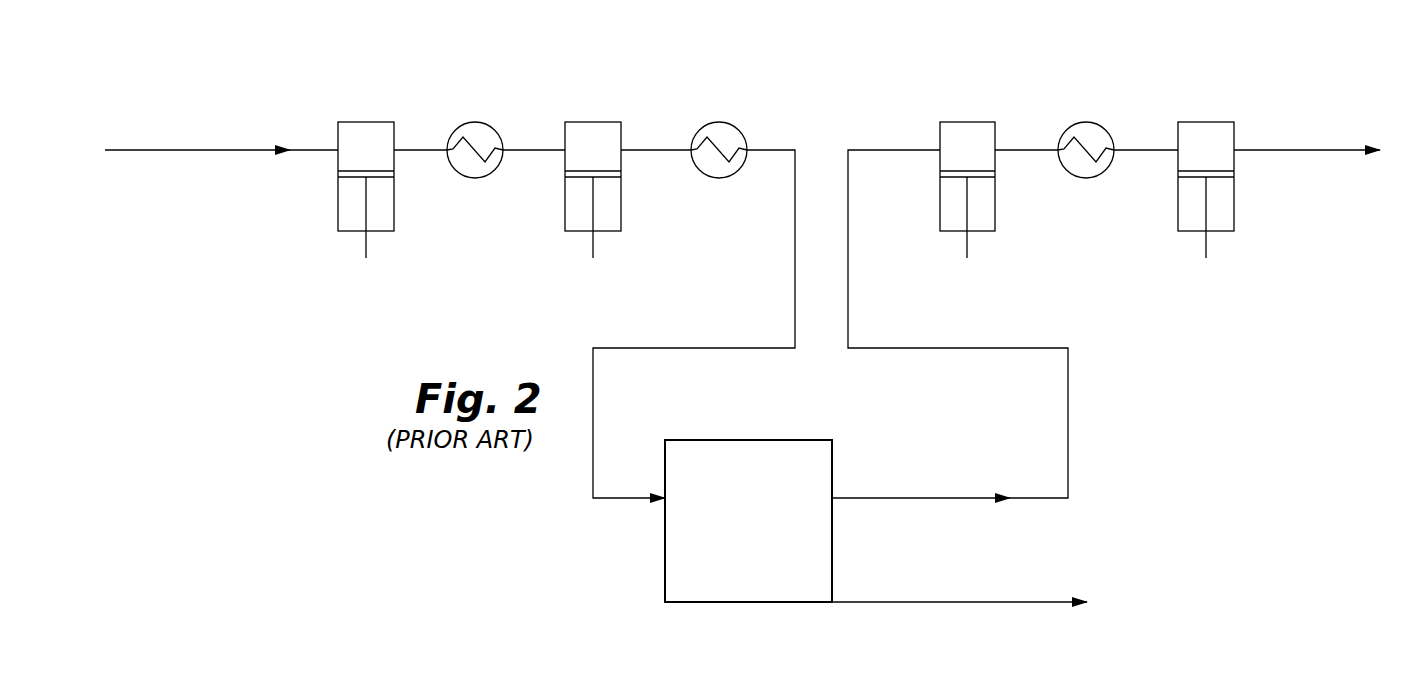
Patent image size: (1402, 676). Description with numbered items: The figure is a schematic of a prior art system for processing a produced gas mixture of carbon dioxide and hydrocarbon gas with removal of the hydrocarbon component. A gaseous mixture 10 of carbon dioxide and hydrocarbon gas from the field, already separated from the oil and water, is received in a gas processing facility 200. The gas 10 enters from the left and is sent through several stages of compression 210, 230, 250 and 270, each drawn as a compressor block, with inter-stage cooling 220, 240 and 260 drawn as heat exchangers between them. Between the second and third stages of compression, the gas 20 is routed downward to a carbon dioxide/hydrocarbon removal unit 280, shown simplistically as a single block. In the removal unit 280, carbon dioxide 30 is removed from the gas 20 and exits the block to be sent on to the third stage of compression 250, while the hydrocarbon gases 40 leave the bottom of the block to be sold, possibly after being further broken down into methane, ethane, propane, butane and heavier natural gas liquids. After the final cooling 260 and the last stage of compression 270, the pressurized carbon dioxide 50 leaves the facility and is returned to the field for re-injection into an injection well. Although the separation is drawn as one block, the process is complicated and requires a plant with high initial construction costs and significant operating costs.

The gas processing facility 200 is at (1192, 58).
The gaseous mixture 10 is at (204, 150).
The first stage of compression 210 is at (368, 122).
The inter-stage cooling 220 is at (477, 122).
The second stage of compression 230 is at (593, 122).
The inter-stage cooling 240 is at (723, 122).
The gas 20 is at (710, 348).
The carbon dioxide/hydrocarbon removal unit 280 is at (760, 440).
The carbon dioxide 30 is at (902, 498).
The hydrocarbon gases 40 is at (957, 602).
The third stage of compression 250 is at (973, 122).
The inter-stage cooling 260 is at (1090, 122).
The fourth stage of compression 270 is at (1208, 122).
The pressurized carbon dioxide 50 is at (1318, 150).